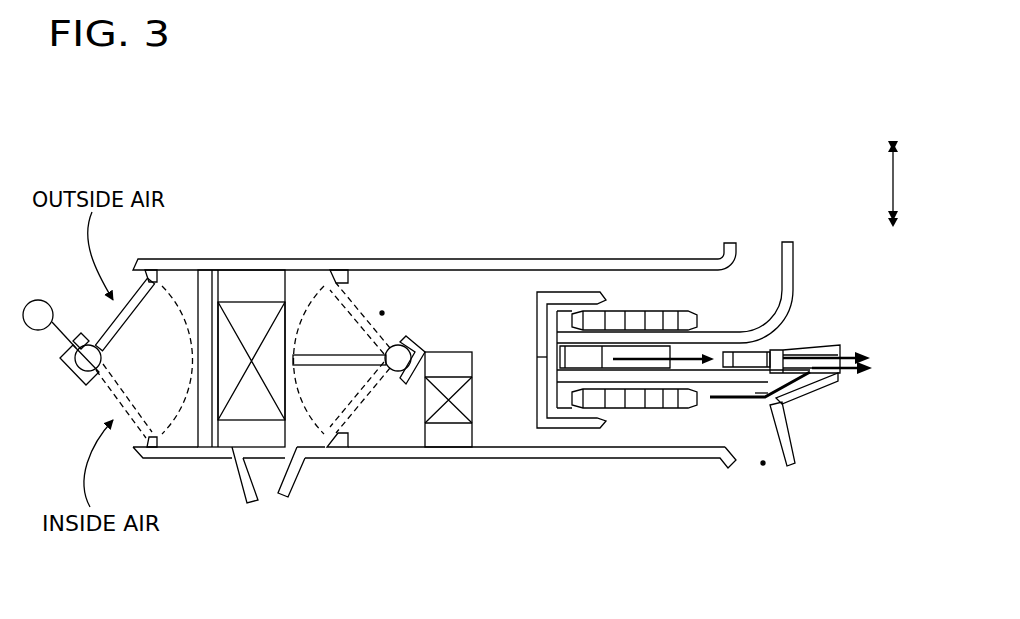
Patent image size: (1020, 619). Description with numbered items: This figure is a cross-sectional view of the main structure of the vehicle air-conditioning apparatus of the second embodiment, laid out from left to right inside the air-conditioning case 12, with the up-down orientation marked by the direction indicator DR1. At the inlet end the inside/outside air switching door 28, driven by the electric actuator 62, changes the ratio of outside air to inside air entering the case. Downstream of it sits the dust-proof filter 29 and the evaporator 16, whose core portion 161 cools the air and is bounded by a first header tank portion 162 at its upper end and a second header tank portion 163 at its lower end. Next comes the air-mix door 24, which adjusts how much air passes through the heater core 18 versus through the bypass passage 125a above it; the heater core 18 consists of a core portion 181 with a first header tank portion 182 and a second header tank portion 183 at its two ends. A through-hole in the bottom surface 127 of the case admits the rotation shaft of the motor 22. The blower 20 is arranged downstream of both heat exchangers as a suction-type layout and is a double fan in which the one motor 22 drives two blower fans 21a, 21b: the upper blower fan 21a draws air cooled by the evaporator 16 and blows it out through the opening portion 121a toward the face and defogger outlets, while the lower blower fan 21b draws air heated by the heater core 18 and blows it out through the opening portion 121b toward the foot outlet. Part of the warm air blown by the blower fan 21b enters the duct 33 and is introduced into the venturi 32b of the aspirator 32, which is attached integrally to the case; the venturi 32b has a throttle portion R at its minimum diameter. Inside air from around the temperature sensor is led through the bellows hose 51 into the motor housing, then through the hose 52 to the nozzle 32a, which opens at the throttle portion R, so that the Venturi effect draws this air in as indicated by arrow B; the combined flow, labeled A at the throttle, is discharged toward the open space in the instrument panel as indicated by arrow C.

The air-conditioning case 12 is at (530, 258).
The evaporator 16 is at (293, 310).
The heater core 18 is at (462, 346).
The core portion 181 is at (450, 383).
The first header tank portion 182 is at (435, 358).
The second header tank portion 183 is at (443, 438).
The blower 20 is at (703, 316).
The blower fan 21a is at (650, 315).
The blower fan 21b is at (630, 395).
The motor 22 is at (580, 350).
The air-mix door 24 is at (332, 353).
The inside/outside air switching door 28 is at (78, 348).
The dust-proof filter 29 is at (200, 408).
The aspirator 32 is at (792, 335).
The nozzle 32a is at (748, 372).
The venturi 32b is at (817, 342).
The duct 33 is at (790, 405).
The hose 51 is at (572, 428).
The hose 52 is at (710, 398).
The electric actuator 62 is at (37, 298).
The opening portion 121a is at (757, 243).
The opening portion 121b is at (763, 463).
The bypass passage 125a is at (382, 313).
The bottom surface 127 is at (385, 440).
The core portion 161 is at (252, 310).
The first header tank portion 162 is at (230, 280).
The second header tank portion 163 is at (238, 438).
The air flow point A is at (812, 392).
The arrow B is at (687, 353).
The arrow C is at (823, 343).
The throttle portion R is at (752, 550).
The up-down direction DR1 is at (893, 183).